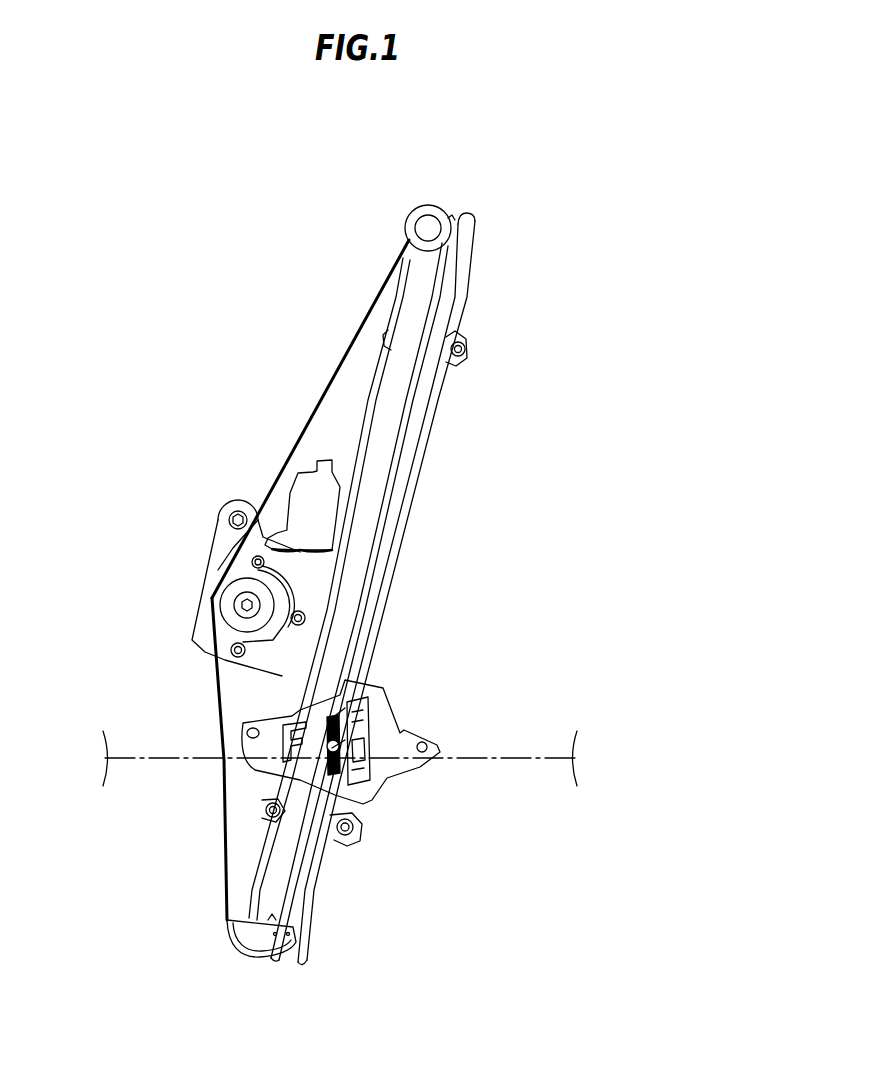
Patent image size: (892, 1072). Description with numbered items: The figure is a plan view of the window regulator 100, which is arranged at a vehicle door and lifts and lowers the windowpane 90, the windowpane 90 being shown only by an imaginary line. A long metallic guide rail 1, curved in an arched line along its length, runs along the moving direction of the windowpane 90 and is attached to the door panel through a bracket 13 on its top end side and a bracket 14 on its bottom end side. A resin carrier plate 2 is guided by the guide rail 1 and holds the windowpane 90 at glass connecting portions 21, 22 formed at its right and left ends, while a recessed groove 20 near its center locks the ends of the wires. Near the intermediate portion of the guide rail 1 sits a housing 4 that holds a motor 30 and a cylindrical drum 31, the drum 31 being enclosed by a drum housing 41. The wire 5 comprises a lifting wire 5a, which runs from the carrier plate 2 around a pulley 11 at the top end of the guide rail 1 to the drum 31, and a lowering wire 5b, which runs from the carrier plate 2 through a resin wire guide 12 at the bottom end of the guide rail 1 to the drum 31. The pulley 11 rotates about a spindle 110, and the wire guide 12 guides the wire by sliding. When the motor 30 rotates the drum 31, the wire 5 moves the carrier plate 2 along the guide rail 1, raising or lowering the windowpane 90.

The window regulator 100 is at (295, 264).
The guide rail 1 is at (453, 321).
The pulley 11 is at (451, 212).
The spindle 110 is at (428, 226).
The wire guide 12 is at (250, 942).
The bracket 13 is at (463, 358).
The bracket 14 is at (357, 831).
The carrier plate 2 is at (382, 730).
The recessed groove 20 is at (363, 700).
The glass connecting portion 21 is at (421, 768).
The glass connecting portion 22 is at (247, 731).
The housing 4 is at (203, 494).
The motor 30 is at (298, 482).
The drum 31 is at (222, 585).
The drum housing 41 is at (202, 636).
The wire 5 is at (352, 581).
The lifting wire 5a is at (405, 426).
The lowering wire 5b is at (310, 872).
The windowpane 90 is at (480, 762).